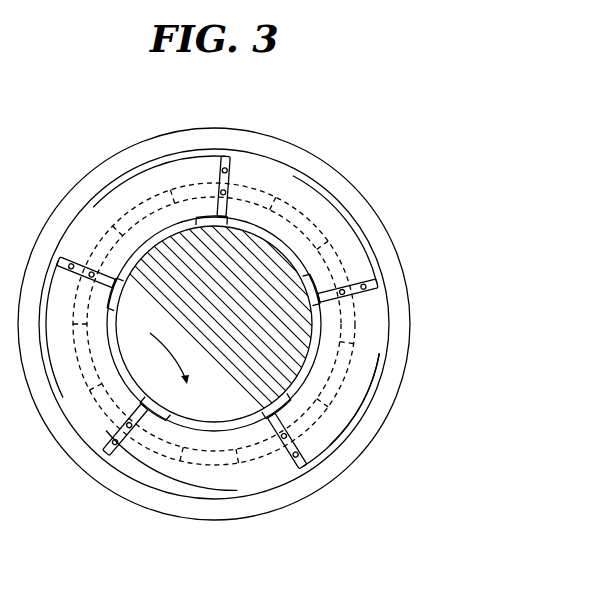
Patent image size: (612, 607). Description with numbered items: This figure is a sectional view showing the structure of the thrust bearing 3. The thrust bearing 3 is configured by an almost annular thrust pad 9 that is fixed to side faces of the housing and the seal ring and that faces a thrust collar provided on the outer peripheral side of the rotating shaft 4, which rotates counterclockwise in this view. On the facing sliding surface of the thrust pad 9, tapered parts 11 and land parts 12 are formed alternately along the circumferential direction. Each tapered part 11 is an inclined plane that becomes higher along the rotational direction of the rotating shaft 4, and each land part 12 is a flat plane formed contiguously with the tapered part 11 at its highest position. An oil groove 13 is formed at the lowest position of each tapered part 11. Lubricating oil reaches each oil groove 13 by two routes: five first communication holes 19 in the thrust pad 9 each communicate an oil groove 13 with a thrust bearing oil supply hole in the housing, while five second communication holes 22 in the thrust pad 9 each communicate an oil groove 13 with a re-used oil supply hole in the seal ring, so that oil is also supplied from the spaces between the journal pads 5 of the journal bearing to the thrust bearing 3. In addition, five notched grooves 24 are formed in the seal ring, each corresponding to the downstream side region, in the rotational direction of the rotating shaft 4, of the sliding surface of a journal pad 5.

The thrust bearing 3 is at (352, 200).
The rotating shaft 4 is at (222, 336).
The journal pad 5 is at (181, 461).
The thrust pad 9 is at (363, 230).
The tapered part 11 is at (356, 395).
The land part 12 is at (370, 318).
The oil groove 13 is at (318, 468).
The first communication hole 19 is at (290, 462).
The second communication hole 22 is at (277, 443).
The notched groove 24 is at (233, 428).